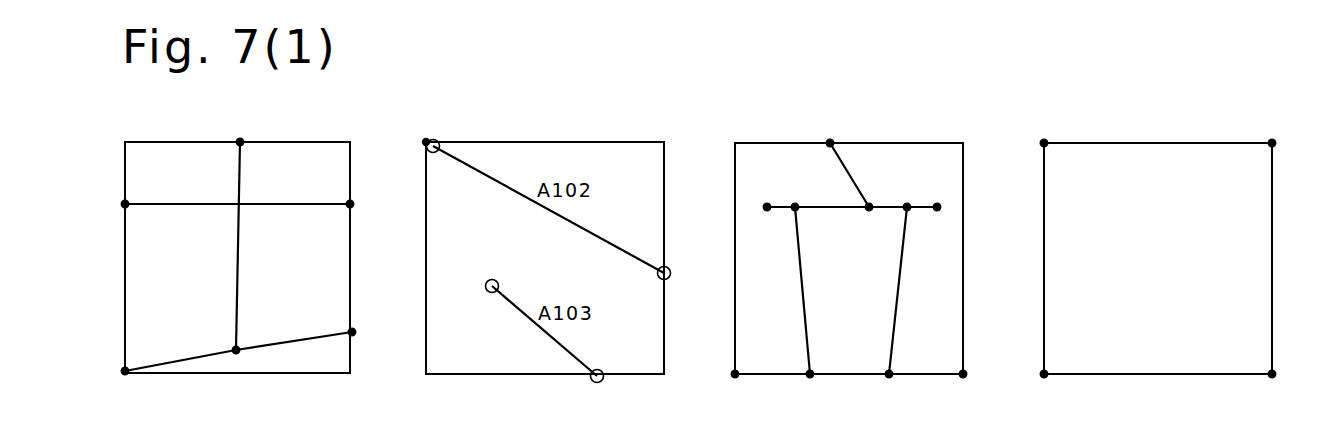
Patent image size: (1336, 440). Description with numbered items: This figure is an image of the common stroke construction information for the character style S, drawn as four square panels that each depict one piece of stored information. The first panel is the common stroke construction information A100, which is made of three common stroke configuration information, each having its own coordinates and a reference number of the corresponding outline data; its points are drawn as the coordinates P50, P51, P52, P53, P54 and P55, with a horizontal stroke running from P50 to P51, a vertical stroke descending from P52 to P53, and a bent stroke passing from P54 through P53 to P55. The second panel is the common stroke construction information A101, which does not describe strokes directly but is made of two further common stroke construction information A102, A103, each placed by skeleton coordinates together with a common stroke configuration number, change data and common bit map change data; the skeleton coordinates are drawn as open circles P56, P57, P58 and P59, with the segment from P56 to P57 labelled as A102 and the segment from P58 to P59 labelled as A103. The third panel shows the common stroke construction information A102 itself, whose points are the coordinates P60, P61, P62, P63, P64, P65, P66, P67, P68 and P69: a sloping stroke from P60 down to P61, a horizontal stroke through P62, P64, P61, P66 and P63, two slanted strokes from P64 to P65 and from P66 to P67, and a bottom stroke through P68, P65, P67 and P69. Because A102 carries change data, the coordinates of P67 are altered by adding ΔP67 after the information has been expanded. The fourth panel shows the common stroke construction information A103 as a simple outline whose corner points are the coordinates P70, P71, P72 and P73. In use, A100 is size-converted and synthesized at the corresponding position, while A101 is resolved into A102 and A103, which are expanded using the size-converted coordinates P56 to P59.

The common stroke construction information A100 is at (237, 241).
The common stroke construction information A101 is at (545, 243).
The common stroke construction information A102 is at (849, 243).
The common stroke construction information A103 is at (1158, 243).
The coordinate point P50 is at (147, 193).
The coordinate point P51 is at (329, 193).
The coordinate point P52 is at (260, 152).
The coordinate point P53 is at (258, 338).
The coordinate point P54 is at (147, 357).
The coordinate point P55 is at (330, 322).
The skeleton coordinate P56 is at (449, 165).
The skeleton coordinate P57 is at (643, 282).
The skeleton coordinate P58 is at (485, 276).
The skeleton coordinate P59 is at (616, 366).
The point P60 is at (855, 153).
The point P61 is at (868, 218).
The point P62 is at (762, 196).
The point P63 is at (938, 196).
The point P64 is at (775, 218).
The point P65 is at (815, 362).
The point P66 is at (924, 218).
The coordinate point P67 is at (883, 362).
The point P68 is at (754, 362).
The point P69 is at (942, 362).
The point P70 is at (1065, 155).
The point P71 is at (1249, 155).
The point P72 is at (1249, 361).
The point P73 is at (1065, 361).